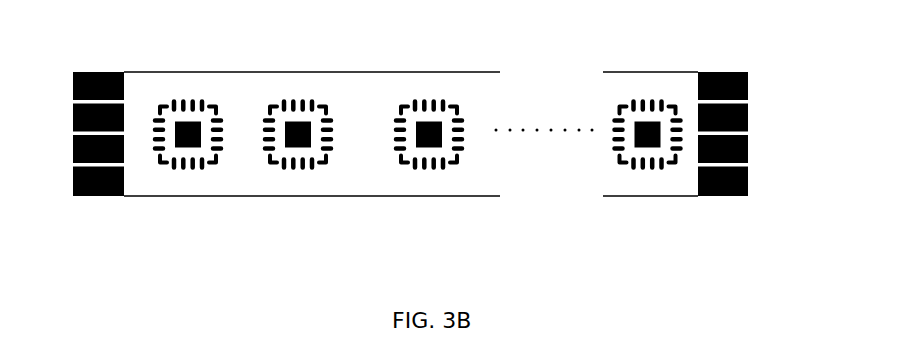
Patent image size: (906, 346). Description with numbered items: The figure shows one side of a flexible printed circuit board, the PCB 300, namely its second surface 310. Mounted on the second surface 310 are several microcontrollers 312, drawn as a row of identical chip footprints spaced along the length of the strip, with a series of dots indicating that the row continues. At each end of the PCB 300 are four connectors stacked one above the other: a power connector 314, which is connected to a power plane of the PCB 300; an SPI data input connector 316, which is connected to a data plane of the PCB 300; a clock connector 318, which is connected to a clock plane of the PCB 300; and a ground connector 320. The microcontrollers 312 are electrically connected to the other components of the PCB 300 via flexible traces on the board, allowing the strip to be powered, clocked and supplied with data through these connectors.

The printed circuit board 300 is at (411, 98).
The second surface 310 is at (245, 88).
The microcontroller 312 is at (184, 145).
The power connector 314 is at (72, 90).
The SPI data input connector 316 is at (72, 118).
The clock connector 318 is at (72, 146).
The ground connector 320 is at (72, 182).